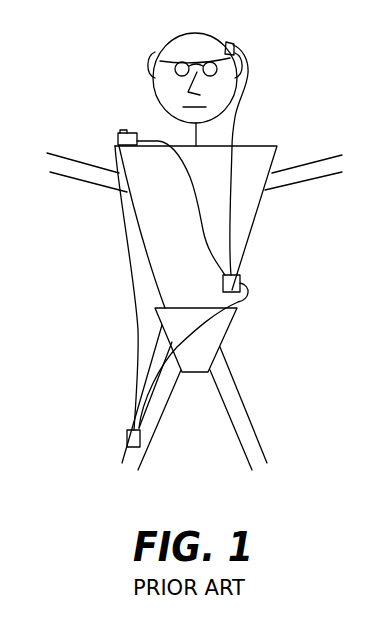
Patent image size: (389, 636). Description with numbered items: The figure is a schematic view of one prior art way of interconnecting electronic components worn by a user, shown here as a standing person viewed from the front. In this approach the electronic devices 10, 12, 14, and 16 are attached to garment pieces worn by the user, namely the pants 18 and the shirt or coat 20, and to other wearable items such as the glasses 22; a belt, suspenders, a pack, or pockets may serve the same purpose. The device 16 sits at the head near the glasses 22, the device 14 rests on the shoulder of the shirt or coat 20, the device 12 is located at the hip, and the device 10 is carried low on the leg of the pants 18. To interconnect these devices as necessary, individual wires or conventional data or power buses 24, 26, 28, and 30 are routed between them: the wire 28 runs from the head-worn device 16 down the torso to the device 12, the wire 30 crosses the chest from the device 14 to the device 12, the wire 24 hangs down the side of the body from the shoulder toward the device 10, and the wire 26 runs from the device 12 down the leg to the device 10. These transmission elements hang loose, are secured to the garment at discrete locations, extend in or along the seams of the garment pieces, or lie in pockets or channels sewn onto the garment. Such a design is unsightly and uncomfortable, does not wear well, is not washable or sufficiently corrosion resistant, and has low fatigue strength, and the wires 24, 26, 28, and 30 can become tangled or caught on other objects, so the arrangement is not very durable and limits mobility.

The electronic device 10 is at (127, 435).
The electronic device 12 is at (223, 283).
The electronic device 14 is at (128, 133).
The electronic device 16 is at (231, 42).
The pants 18 is at (152, 417).
The shirt or coat 20 is at (247, 208).
The glasses 22 is at (227, 57).
The wire or bus 24 is at (137, 350).
The wire or bus 26 is at (148, 388).
The wire or bus 28 is at (242, 107).
The wire or bus 30 is at (190, 198).